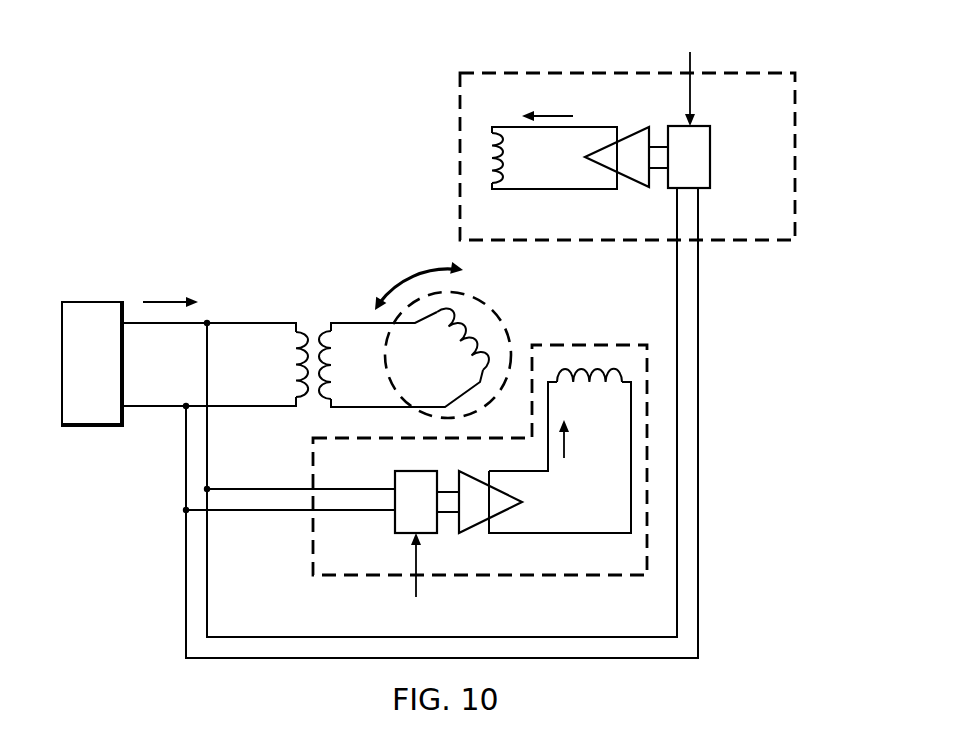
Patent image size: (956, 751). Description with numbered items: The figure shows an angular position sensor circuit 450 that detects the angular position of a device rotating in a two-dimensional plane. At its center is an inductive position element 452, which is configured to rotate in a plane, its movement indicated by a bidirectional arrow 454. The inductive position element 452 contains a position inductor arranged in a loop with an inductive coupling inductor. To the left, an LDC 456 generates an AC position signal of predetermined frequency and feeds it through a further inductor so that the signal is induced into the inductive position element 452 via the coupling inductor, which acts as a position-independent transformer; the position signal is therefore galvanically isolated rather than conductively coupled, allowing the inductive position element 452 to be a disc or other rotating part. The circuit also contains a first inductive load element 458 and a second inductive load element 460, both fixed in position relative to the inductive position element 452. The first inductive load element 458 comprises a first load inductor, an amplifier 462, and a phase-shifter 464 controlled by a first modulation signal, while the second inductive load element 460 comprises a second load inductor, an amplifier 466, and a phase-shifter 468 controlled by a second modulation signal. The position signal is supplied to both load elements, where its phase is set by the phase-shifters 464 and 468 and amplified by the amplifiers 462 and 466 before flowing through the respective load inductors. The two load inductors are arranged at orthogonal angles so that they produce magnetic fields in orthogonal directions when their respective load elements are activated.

The angular position sensor circuit 450 is at (116, 177).
The inductive position element 452 is at (346, 285).
The bidirectional arrow 454 is at (414, 272).
The LDC 456 is at (113, 394).
The first inductive load element 458 is at (461, 105).
The second inductive load element 460 is at (312, 543).
The amplifier 462 is at (637, 190).
The phase-shifter 464 is at (712, 158).
The amplifier 466 is at (524, 512).
The phase-shifter 468 is at (394, 522).